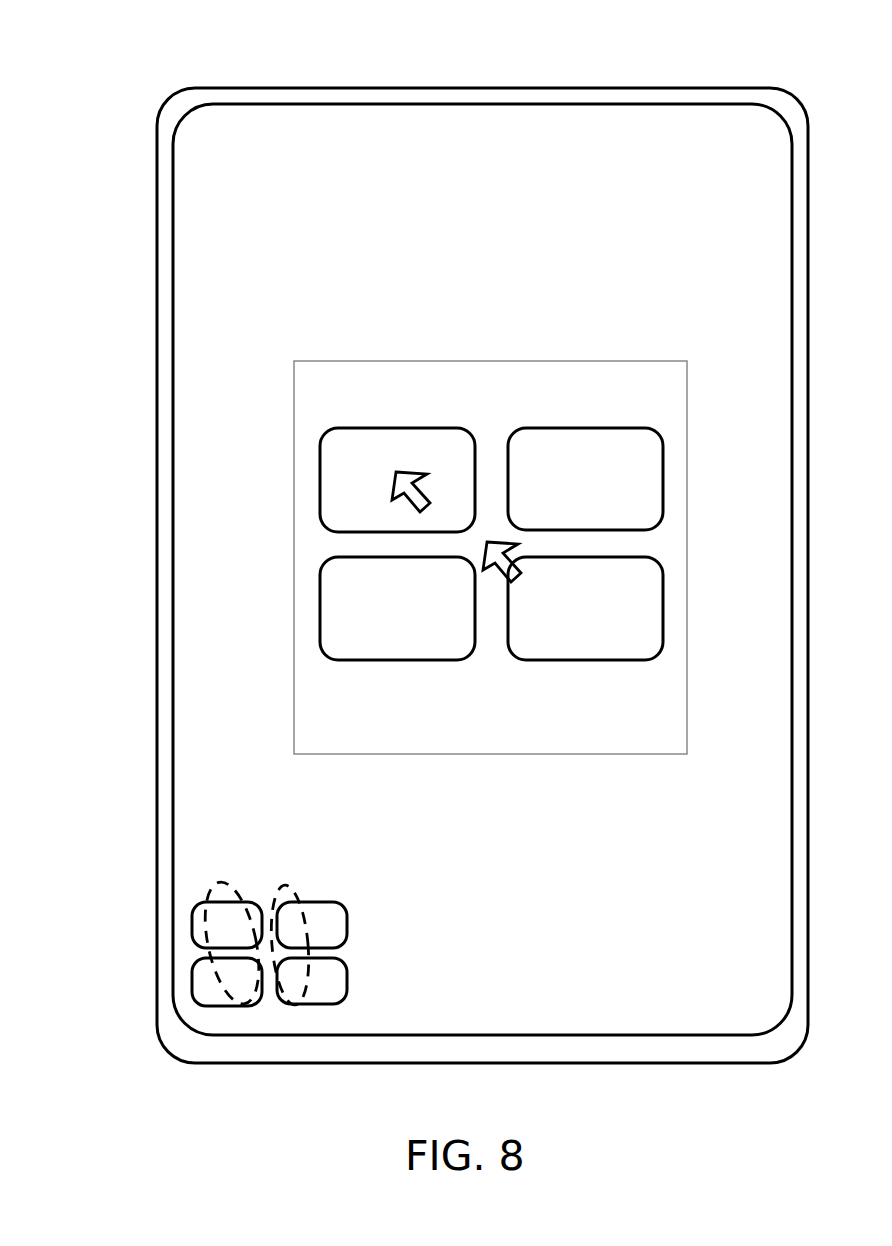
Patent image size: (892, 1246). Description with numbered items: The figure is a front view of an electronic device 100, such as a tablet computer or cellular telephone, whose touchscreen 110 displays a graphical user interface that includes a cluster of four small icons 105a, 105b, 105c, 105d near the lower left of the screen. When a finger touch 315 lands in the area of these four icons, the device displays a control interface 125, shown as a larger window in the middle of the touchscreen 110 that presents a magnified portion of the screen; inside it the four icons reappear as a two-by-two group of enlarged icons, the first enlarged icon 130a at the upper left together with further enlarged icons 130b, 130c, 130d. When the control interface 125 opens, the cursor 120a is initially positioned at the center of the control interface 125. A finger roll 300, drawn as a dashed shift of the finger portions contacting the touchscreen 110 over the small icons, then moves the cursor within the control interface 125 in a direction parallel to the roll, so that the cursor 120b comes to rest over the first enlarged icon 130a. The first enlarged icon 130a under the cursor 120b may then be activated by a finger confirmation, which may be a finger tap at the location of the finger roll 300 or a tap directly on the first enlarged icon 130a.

The electronic device 100 is at (116, 61).
The touchscreen 110 is at (190, 577).
The control interface 125 is at (294, 388).
The first enlarged icon 130a is at (320, 527).
The enlarged icon 130b is at (320, 606).
The enlarged icon 130c is at (663, 469).
The enlarged icon 130d is at (663, 615).
The cursor 120a is at (517, 557).
The cursor 120b is at (396, 475).
The icon 105a is at (192, 925).
The icon 105b is at (192, 983).
The icon 105c is at (347, 925).
The icon 105d is at (347, 983).
The finger roll 300 is at (222, 892).
The finger touch 315 is at (282, 897).